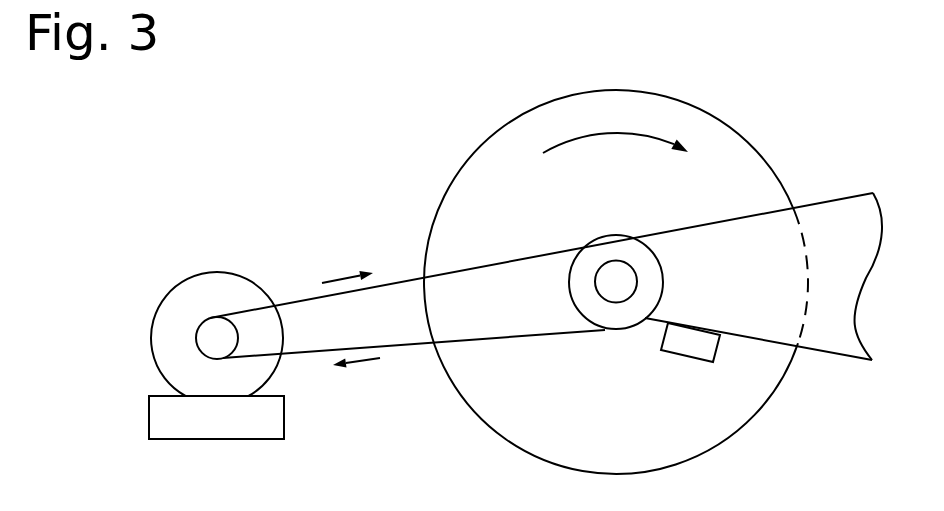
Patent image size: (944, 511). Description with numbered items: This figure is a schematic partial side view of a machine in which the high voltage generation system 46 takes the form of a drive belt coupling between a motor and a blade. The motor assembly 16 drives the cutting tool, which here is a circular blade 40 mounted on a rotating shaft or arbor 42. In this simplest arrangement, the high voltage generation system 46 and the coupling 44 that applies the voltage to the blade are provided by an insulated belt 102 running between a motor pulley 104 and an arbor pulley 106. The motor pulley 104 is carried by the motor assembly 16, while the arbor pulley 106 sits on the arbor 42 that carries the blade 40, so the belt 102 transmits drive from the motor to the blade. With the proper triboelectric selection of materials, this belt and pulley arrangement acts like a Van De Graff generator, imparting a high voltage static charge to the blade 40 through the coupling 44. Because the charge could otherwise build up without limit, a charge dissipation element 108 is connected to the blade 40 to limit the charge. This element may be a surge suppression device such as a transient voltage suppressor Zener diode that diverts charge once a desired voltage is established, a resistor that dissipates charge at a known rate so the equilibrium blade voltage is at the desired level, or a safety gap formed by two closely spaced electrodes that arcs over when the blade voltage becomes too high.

The motor assembly 16 is at (170, 252).
The circular blade 40 is at (632, 461).
The arbor 42 is at (617, 288).
The coupling 44 is at (460, 217).
The high voltage generation system 46 is at (332, 223).
The insulated belt 102 is at (427, 347).
The motor pulley 104 is at (213, 339).
The arbor pulley 106 is at (610, 250).
The charge dissipation element 108 is at (679, 338).